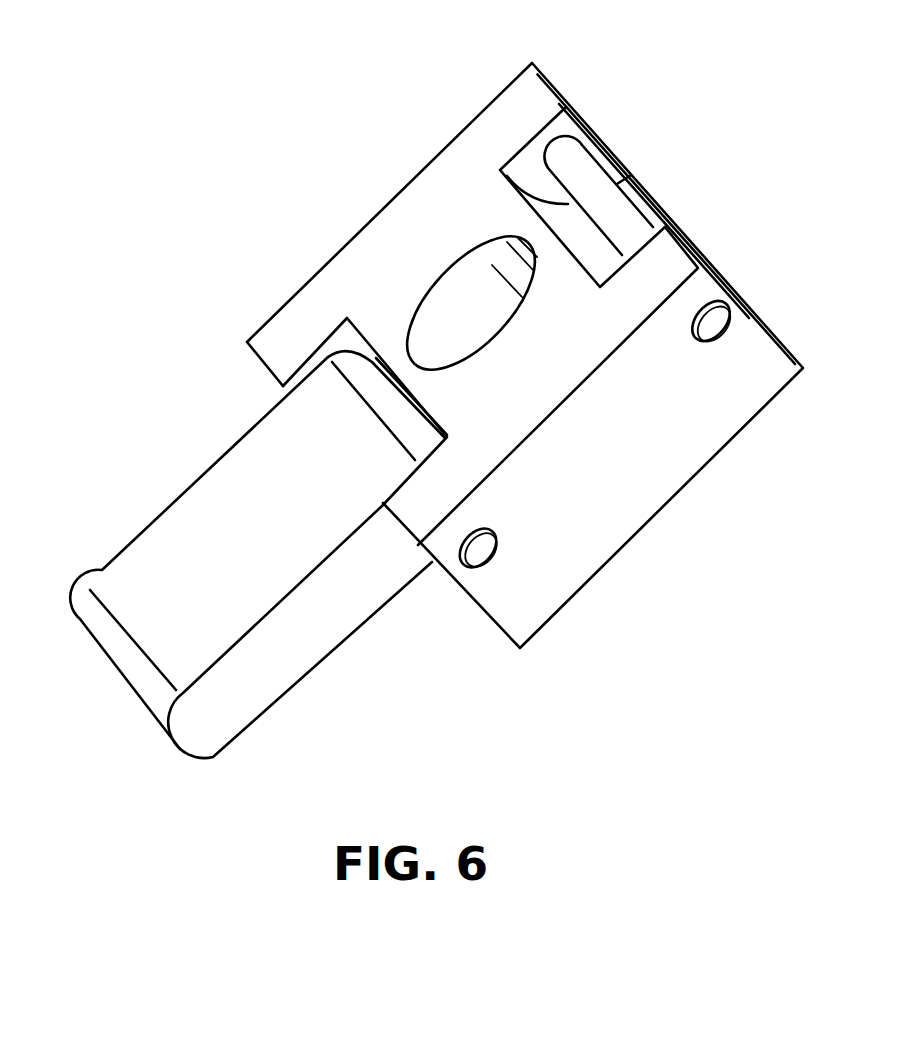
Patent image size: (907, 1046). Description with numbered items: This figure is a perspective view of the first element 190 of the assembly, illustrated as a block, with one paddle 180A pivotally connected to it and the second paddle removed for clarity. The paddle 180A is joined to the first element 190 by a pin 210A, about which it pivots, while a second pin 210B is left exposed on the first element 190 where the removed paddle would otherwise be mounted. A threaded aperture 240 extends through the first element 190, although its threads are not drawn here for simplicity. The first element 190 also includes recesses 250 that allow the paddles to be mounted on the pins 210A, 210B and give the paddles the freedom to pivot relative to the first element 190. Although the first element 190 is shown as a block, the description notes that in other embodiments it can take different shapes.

The first element 190 is at (662, 472).
The paddle 180A is at (204, 730).
The pin 210A is at (473, 543).
The pin 210B is at (622, 227).
The threaded aperture 240 is at (450, 290).
The recesses 250 is at (618, 166).